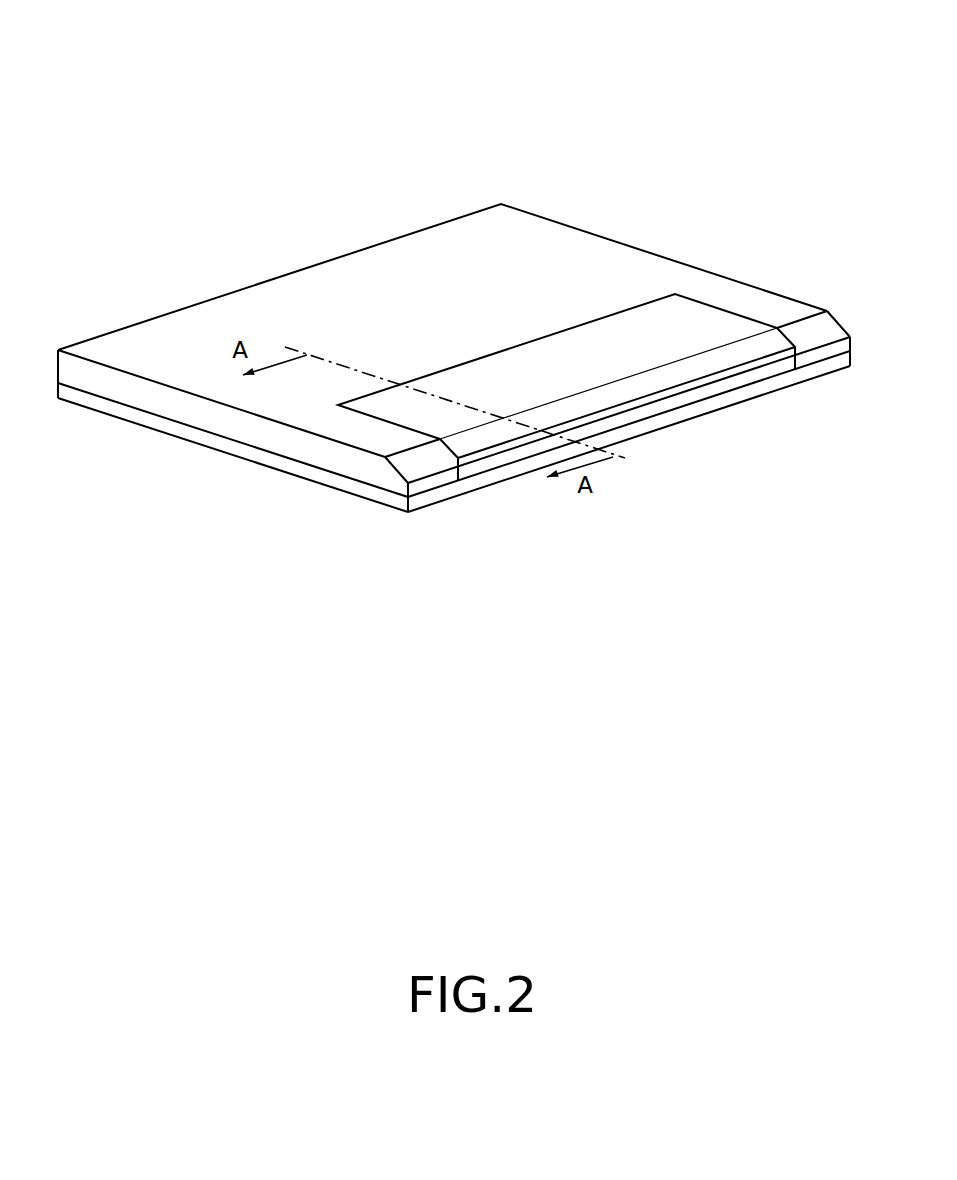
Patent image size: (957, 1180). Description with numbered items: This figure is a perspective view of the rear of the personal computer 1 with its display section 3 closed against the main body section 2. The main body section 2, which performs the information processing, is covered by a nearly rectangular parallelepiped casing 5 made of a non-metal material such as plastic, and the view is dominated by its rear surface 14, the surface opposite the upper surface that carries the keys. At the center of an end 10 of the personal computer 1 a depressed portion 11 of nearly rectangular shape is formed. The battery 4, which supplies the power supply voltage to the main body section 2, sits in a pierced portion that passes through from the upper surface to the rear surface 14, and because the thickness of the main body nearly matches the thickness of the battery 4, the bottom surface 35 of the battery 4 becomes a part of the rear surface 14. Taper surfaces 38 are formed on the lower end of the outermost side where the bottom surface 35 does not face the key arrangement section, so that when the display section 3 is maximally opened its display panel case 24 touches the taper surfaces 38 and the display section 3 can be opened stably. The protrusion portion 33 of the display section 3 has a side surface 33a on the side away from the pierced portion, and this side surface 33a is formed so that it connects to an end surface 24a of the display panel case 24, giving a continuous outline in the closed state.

The personal computer 1 is at (286, 96).
The main body section 2 is at (651, 226).
The display section 3 is at (225, 481).
The battery 4 is at (688, 311).
The casing 5 is at (580, 207).
The end 10 is at (341, 462).
The depressed portion 11 is at (752, 310).
The rear surface 14 is at (352, 268).
The display panel case 24 is at (137, 418).
The end surface 24a is at (494, 478).
The protrusion portion 33 is at (673, 404).
The side surface 33a is at (743, 378).
The bottom surface 35 is at (530, 358).
The taper surfaces 38 is at (431, 468).